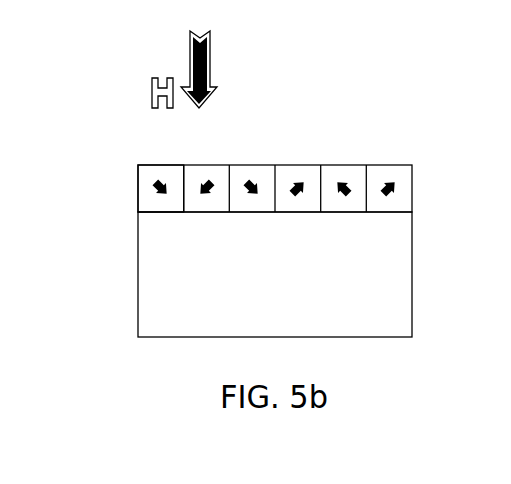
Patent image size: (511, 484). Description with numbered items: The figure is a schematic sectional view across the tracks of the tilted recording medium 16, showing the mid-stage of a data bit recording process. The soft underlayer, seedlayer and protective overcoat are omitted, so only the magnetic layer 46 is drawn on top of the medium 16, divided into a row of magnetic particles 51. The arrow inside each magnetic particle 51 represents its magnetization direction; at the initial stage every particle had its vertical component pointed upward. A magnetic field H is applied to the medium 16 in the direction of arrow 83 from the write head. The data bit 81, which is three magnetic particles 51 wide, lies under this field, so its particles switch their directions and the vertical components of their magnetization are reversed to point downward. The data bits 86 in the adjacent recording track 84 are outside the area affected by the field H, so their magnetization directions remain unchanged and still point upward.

The recording medium 16 is at (122, 271).
The magnetic layer 46 is at (420, 186).
The magnetic particle 51 is at (145, 172).
The data bit 81 is at (160, 165).
The arrow indicating direction of magnetic field H 83 is at (205, 63).
The adjacent recording track 84 is at (293, 167).
The data bits 86 is at (392, 180).